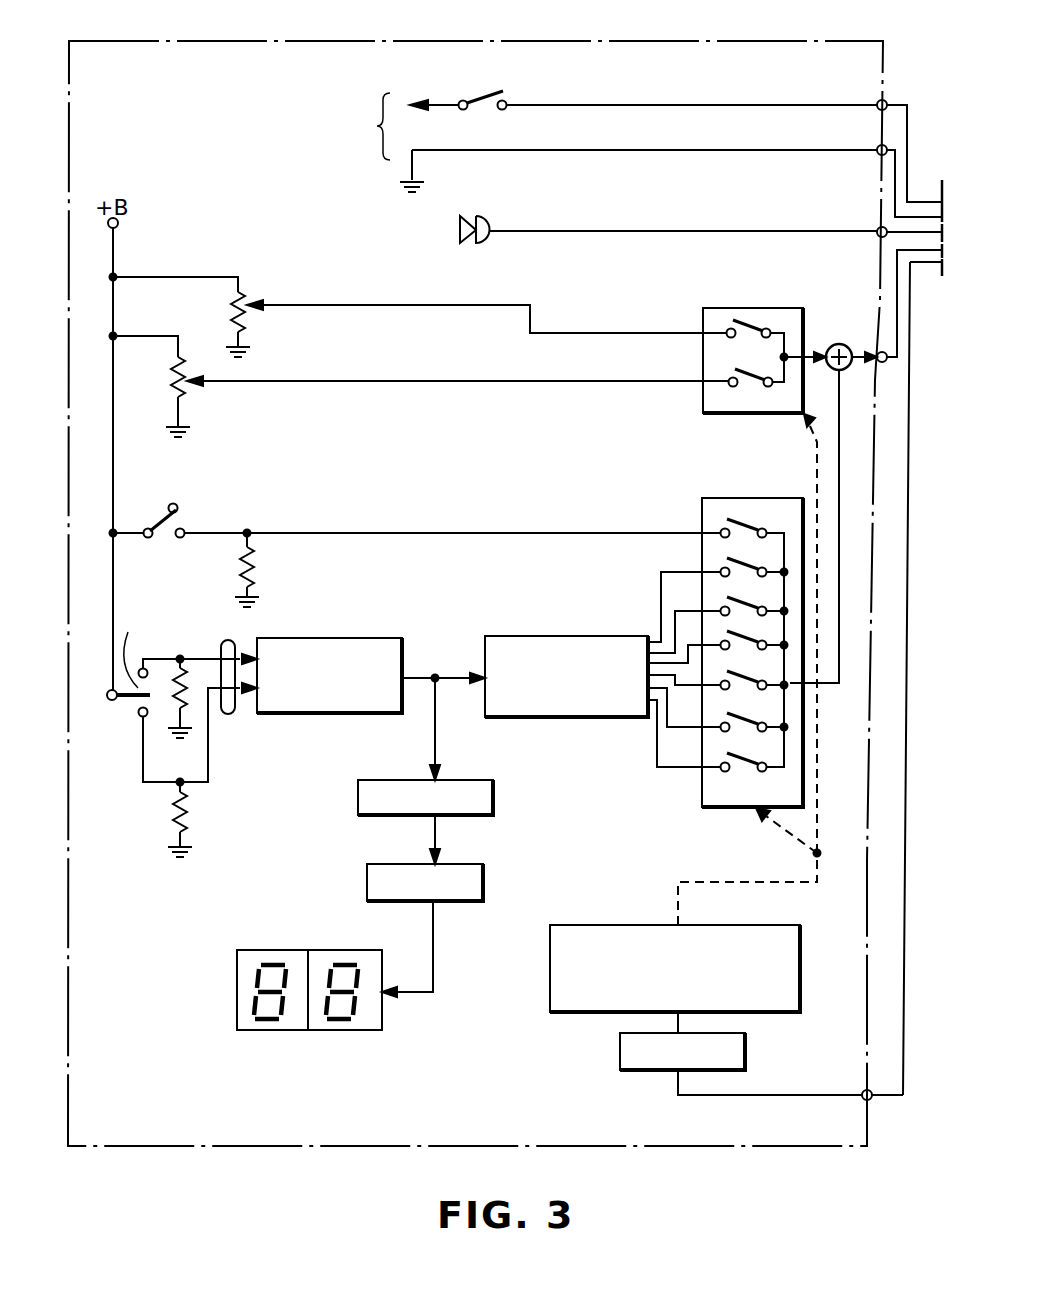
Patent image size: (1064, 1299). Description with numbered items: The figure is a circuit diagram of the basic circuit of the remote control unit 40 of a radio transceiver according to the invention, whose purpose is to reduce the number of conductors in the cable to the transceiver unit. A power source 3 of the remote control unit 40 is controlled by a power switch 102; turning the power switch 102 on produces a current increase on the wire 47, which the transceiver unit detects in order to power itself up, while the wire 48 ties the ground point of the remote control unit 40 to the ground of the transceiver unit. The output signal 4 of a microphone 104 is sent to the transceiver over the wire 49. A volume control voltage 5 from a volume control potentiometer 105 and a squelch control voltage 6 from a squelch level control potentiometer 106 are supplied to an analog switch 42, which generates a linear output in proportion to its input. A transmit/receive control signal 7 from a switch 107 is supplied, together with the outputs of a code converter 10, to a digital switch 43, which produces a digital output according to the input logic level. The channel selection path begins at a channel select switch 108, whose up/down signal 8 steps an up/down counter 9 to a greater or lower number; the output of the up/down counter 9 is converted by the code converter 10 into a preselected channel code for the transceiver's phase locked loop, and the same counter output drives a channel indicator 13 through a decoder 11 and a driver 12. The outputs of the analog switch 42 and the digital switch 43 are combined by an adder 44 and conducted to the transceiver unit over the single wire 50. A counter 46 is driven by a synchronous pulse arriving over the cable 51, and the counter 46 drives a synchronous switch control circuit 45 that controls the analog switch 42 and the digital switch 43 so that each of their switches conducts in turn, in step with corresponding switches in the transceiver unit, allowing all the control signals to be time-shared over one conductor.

The remote control unit 40 is at (455, 41).
The power source 3 is at (624, 132).
The power switch 102 is at (490, 96).
The microphone 104 is at (490, 222).
The output signal of microphone 4 is at (572, 231).
The volume control potentiometer 105 is at (245, 294).
The volume control voltage 5 is at (350, 305).
The squelch level control potentiometer 106 is at (188, 350).
The squelch control voltage 6 is at (314, 381).
The switch 107 is at (186, 514).
The transmit/receive control signal 7 is at (318, 533).
The channel select switch 108 is at (163, 728).
The up/down signal 8 is at (228, 640).
The up/down counter 9 is at (340, 638).
The code converter 10 is at (525, 636).
The decoder 11 is at (496, 800).
The driver 12 is at (484, 876).
The channel indicator 13 is at (292, 950).
The analog switch 42 is at (762, 302).
The digital switch 43 is at (734, 498).
The adder 44 is at (839, 344).
The synchronous switch control circuit 45 is at (615, 925).
The counter 46 is at (746, 1052).
The wire 47 is at (905, 128).
The wire 48 is at (895, 178).
The wire 49 is at (900, 228).
The wire 50 is at (897, 255).
The cable 51 is at (910, 275).